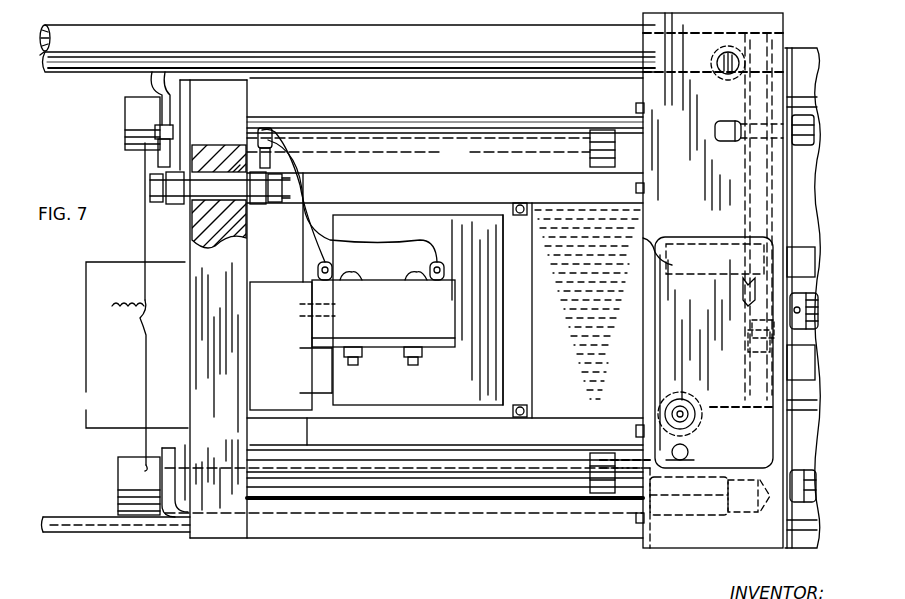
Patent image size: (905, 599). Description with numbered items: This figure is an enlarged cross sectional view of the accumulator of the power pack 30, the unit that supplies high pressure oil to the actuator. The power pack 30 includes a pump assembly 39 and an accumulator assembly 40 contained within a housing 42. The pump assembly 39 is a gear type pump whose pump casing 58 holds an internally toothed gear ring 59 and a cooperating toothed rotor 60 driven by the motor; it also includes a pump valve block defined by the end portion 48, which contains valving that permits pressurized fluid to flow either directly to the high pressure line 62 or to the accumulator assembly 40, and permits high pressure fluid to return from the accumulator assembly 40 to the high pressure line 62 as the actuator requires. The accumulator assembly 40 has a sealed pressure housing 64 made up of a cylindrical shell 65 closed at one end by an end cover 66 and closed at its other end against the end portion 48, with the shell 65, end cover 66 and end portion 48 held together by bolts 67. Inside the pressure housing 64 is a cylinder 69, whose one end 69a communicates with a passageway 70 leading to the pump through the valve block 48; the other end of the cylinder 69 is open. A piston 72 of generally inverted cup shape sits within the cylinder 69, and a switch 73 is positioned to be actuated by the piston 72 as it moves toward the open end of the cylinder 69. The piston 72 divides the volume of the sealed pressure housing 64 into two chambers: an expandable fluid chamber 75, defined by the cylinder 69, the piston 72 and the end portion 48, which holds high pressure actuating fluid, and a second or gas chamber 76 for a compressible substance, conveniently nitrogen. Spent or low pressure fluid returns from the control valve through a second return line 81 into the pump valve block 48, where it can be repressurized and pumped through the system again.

The power pack 30 is at (98, 409).
The pump assembly 39 is at (705, 532).
The accumulator assembly 40 is at (397, 458).
The housing 42 is at (432, 542).
The end portion 48 is at (780, 22).
The pump casing 58 is at (819, 243).
The internally toothed gear ring 59 is at (797, 258).
The toothed rotor 60 is at (800, 340).
The high pressure line 62 is at (286, 26).
The sealed pressure housing 64 is at (277, 543).
The cylindrical shell 65 is at (327, 522).
The end cover 66 is at (222, 525).
The bolts 67 is at (135, 128).
The cylinder 69 is at (552, 430).
The end of cylinder 69a is at (647, 206).
The passageway 70 is at (672, 280).
The piston 72 is at (520, 360).
The switch 73 is at (440, 327).
The expandable fluid chamber 75 is at (615, 400).
The gas chamber 76 is at (467, 162).
The second return line 81 is at (191, 40).